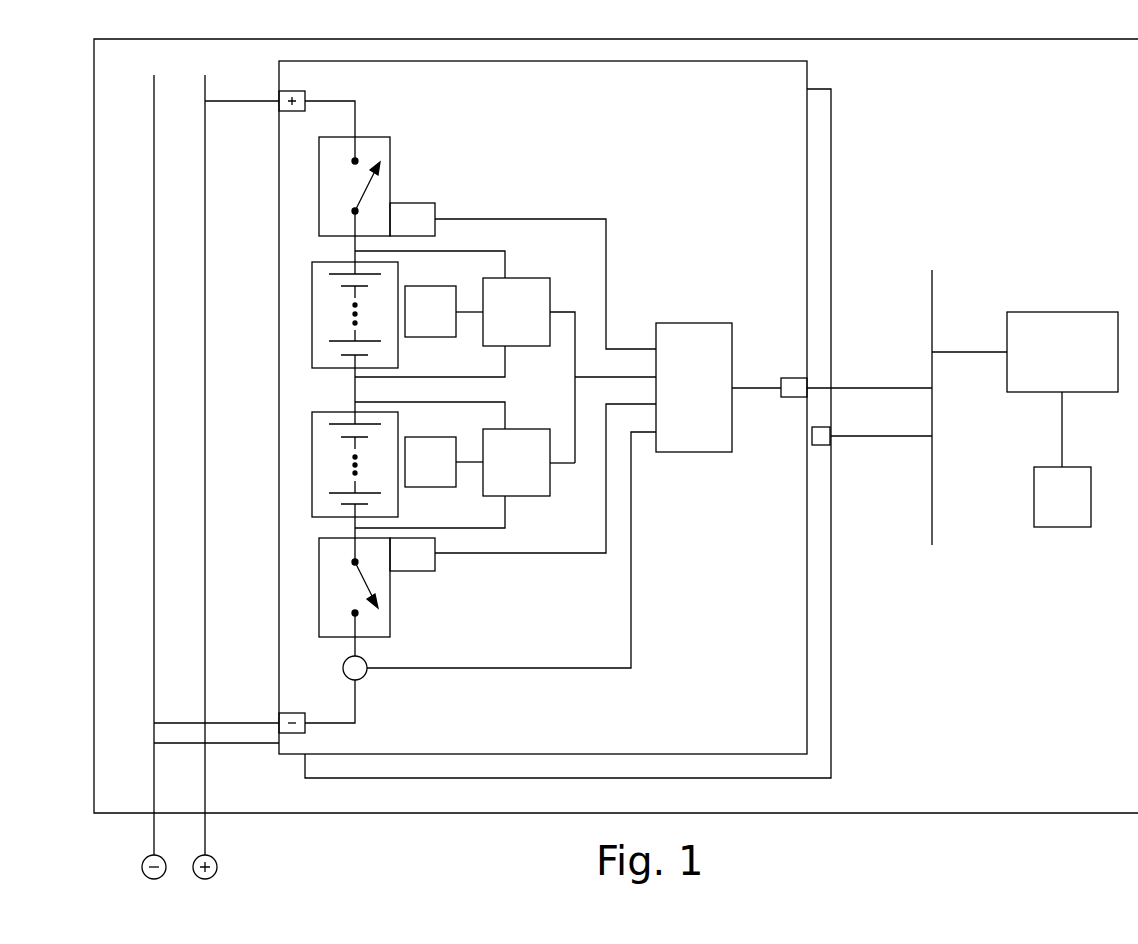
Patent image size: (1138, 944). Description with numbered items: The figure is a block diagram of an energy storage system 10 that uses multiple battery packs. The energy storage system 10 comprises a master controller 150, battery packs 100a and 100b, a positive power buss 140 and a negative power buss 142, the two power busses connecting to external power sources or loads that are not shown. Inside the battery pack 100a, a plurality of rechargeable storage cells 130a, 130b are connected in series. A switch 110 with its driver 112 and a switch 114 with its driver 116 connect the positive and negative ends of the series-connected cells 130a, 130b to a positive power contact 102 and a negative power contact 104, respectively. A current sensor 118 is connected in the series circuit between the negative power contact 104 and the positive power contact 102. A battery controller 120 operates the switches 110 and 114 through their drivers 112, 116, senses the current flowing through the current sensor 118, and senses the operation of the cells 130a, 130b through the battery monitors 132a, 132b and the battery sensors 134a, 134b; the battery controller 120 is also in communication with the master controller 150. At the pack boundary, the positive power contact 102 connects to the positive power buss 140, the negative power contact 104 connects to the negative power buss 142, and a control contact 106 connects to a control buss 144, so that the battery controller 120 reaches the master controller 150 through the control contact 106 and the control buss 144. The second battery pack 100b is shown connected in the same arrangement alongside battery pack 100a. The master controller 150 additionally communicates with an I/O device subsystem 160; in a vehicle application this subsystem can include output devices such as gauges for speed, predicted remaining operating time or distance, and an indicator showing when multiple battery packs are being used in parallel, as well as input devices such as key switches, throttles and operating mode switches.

The energy storage system 10 is at (616, 426).
The battery pack 100a is at (543, 407).
The battery pack 100b is at (832, 202).
The positive power contact 102 is at (307, 89).
The negative power contact 104 is at (308, 712).
The control contact 106 is at (780, 396).
The switch 110 is at (354, 205).
The driver 112 is at (523, 276).
The switch 114 is at (354, 597).
The driver 116 is at (523, 487).
The current sensor 118 is at (370, 671).
The battery controller 120 is at (718, 387).
The rechargeable storage cell 130a is at (310, 302).
The rechargeable storage cell 130b is at (310, 451).
The battery monitor 132a is at (569, 370).
The battery monitor 132b is at (529, 462).
The battery sensor 134a is at (444, 311).
The battery sensor 134b is at (444, 462).
The positive power buss 140 is at (203, 243).
The negative power buss 142 is at (152, 321).
The control buss 144 is at (934, 298).
The master controller 150 is at (1062, 389).
The I/O device subsystem 160 is at (1062, 497).